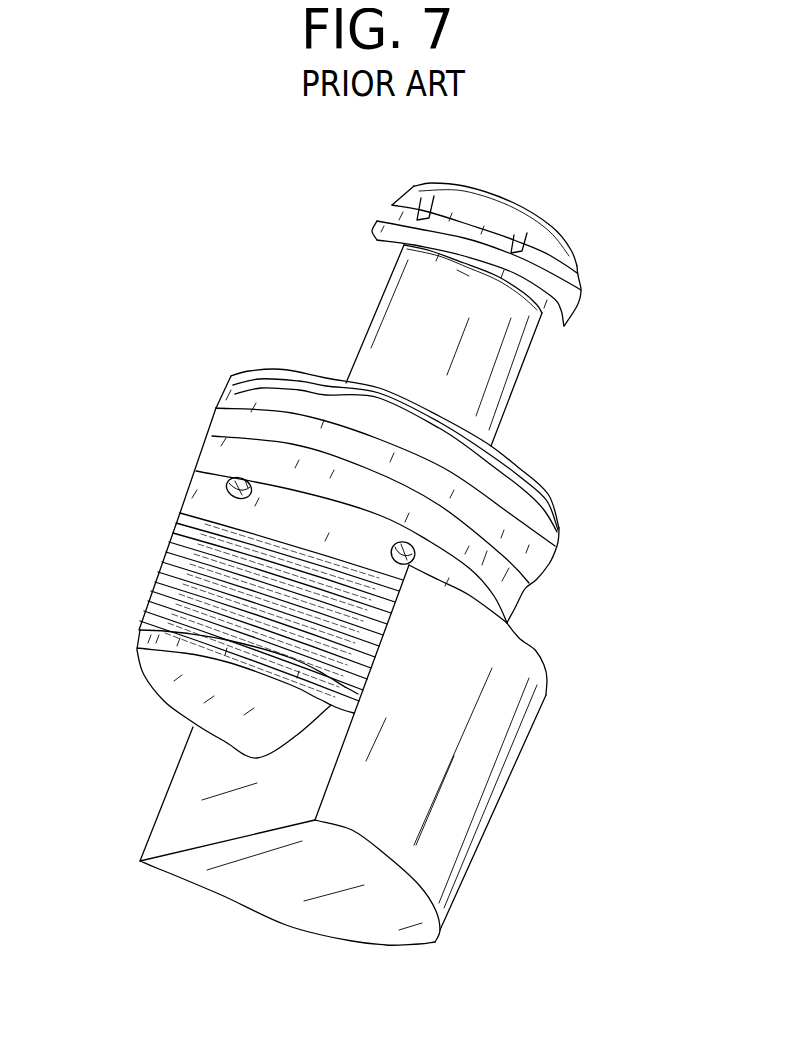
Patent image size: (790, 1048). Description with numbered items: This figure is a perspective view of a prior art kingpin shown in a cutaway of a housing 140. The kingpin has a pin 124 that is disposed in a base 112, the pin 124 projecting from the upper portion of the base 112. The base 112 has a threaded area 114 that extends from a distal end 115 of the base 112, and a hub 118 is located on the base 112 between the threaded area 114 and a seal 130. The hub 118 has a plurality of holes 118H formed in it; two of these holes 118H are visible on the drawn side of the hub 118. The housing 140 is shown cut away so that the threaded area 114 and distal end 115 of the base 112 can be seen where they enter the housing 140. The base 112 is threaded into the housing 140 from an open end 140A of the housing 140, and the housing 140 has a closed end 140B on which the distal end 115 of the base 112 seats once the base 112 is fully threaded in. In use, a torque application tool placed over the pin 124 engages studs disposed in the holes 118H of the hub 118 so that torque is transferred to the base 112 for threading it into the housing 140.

The base 112 is at (160, 497).
The threaded area 114 is at (157, 520).
The distal end 115 is at (181, 693).
The hub 118 is at (477, 595).
The holes 118H is at (240, 480).
The pin 124 is at (550, 384).
The seal 130 is at (595, 519).
The housing 140 is at (447, 842).
The open end 140A is at (547, 665).
The closed end 140B is at (286, 735).